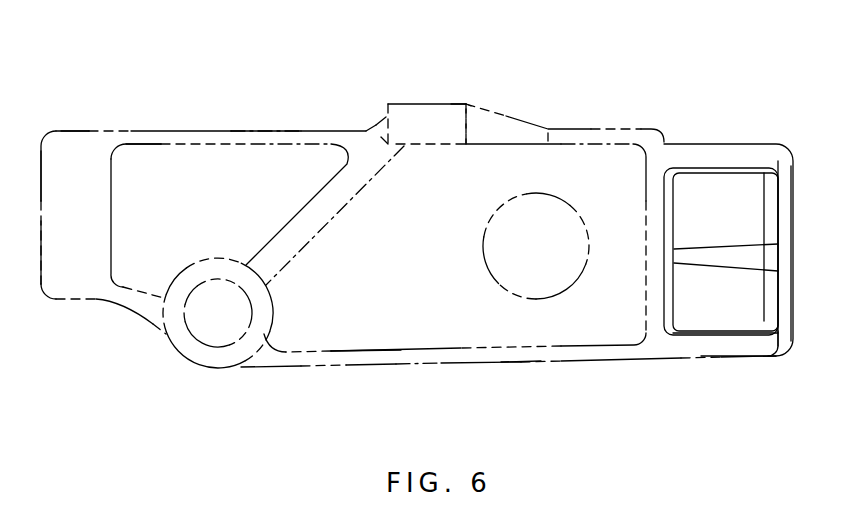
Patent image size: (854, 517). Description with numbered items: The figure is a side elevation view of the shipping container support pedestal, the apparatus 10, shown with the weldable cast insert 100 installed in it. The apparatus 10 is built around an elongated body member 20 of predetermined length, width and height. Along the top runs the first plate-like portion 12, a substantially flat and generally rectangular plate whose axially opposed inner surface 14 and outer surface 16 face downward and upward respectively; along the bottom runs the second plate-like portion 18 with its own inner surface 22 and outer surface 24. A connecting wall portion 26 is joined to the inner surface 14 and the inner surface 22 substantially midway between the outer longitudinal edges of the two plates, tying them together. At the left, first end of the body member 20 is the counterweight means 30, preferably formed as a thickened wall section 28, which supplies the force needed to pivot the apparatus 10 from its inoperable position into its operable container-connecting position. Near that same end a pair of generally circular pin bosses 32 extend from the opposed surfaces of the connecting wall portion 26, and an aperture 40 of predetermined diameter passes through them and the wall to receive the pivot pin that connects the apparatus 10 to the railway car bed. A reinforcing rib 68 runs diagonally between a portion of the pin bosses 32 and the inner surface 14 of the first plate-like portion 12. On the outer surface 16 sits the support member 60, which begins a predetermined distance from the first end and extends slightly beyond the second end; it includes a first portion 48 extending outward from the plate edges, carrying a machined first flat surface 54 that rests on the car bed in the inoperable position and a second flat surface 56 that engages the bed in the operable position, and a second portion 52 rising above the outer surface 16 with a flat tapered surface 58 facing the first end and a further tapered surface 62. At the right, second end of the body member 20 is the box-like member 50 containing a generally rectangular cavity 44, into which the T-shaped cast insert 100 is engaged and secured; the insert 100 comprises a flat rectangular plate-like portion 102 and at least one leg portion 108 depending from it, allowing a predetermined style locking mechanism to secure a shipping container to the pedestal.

The apparatus 10 is at (558, 108).
The first plate-like portion 12 is at (245, 135).
The inner surface 14 is at (165, 142).
The outer surface 16 is at (143, 130).
The second plate-like portion 18 is at (446, 362).
The elongated body member 20 is at (284, 128).
The inner surface 22 is at (379, 351).
The outer surface 24 is at (517, 361).
The connecting wall portion 26 is at (407, 281).
The thickened wall section 28 is at (73, 157).
The counterweight means 30 is at (37, 256).
The pin bosses 32 is at (260, 293).
The aperture 40 is at (240, 330).
The cavity 44 is at (668, 170).
The first portion 48 is at (423, 113).
The box-like member 50 is at (727, 141).
The second portion 52 is at (378, 121).
The first flat surface 54 is at (452, 144).
The second flat surface 56 is at (384, 141).
The tapered surface 58 is at (373, 122).
The support member 60 is at (456, 101).
The tapered surface 62 is at (518, 117).
The reinforcing rib 68 is at (342, 213).
The weldable cast insert 100 is at (795, 183).
The plate-like portion 102 is at (785, 318).
The leg portion 108 is at (730, 315).